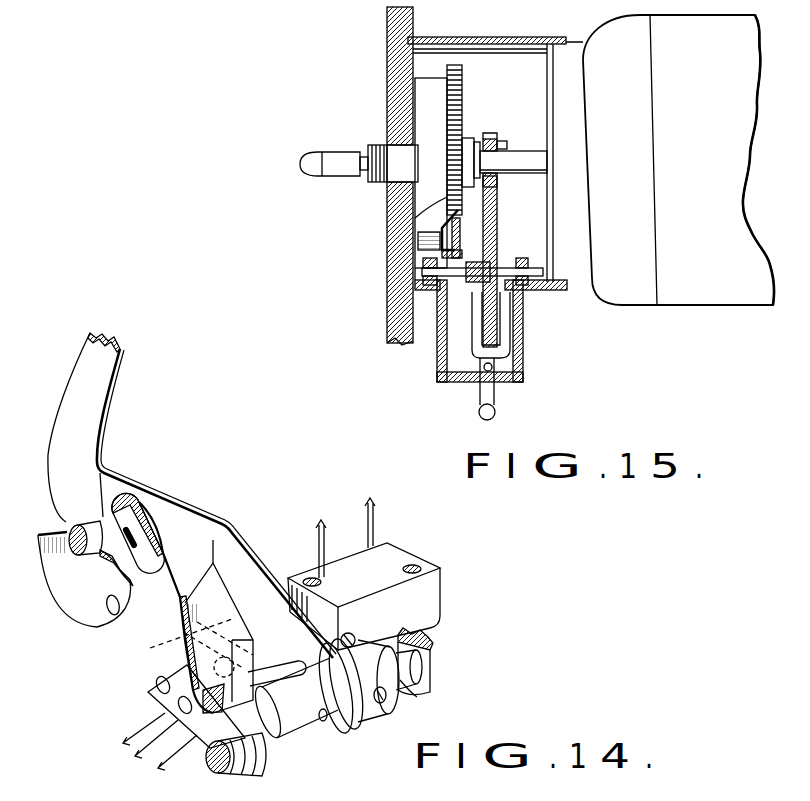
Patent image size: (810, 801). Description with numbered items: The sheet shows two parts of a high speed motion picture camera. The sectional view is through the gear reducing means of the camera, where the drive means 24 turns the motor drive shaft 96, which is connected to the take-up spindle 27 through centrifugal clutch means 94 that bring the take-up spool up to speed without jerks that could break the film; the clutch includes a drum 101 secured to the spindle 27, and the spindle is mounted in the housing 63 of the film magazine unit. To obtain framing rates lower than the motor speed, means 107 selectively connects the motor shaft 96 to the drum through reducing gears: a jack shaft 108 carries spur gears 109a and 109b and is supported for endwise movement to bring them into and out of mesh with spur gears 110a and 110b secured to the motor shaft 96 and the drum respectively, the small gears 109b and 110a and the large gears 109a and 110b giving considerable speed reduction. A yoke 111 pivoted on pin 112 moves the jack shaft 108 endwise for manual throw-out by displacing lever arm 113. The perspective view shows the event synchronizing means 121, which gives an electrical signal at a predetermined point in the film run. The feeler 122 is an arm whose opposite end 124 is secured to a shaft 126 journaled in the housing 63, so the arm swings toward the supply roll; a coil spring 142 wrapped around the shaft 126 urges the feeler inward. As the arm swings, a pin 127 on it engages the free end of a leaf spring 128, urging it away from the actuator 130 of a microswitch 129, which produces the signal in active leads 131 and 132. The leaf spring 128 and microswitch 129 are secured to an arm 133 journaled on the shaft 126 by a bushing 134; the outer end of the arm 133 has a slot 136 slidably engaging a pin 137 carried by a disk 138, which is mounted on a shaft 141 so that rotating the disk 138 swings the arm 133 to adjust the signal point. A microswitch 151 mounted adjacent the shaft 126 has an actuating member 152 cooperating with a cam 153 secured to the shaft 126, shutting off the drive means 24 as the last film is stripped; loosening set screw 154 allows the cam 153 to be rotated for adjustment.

In FIG. 15, the drive means 24 is at (677, 303).
In FIG. 15, the take-up spindle 27 is at (348, 152).
In FIG. 15, the housing 63 is at (387, 22).
In FIG. 15, the centrifugal clutch means 94 is at (427, 78).
In FIG. 15, the motor drive shaft 96 is at (527, 160).
In FIG. 15, the drum 101 is at (423, 190).
In FIG. 15, the means for selectively connecting 107 is at (416, 362).
In FIG. 15, the jack shaft 108 is at (540, 276).
In FIG. 15, the spur gear 109a is at (497, 238).
In FIG. 15, the spur gear 109b is at (450, 282).
In FIG. 15, the spur gear 110a is at (495, 139).
In FIG. 15, the spur gear 110b is at (443, 205).
In FIG. 15, the yoke 111 is at (509, 349).
In FIG. 15, the pin 112 is at (493, 367).
In FIG. 15, the lever arm 113 is at (492, 400).
In FIG. 14, the event synchronizing means 121 is at (98, 683).
In FIG. 14, the feeler 122 is at (96, 374).
In FIG. 14, the opposite end 124 is at (355, 720).
In FIG. 14, the shaft 126 is at (433, 672).
In FIG. 14, the pin 127 is at (287, 662).
In FIG. 14, the leaf spring 128 is at (205, 640).
In FIG. 14, the microswitch 129 is at (198, 682).
In FIG. 14, the actuator 130 is at (195, 641).
In FIG. 14, the active lead 131 is at (122, 745).
In FIG. 14, the active lead 132 is at (158, 770).
In FIG. 14, the arm 133 is at (150, 691).
In FIG. 14, the bushing 134 is at (288, 738).
In FIG. 14, the slot 136 is at (132, 540).
In FIG. 14, the pin 137 is at (143, 578).
In FIG. 14, the disk 138 is at (87, 602).
In FIG. 14, the shaft 141 is at (92, 527).
In FIG. 14, the coil spring 142 is at (245, 765).
In FIG. 14, the microswitch 151 is at (408, 560).
In FIG. 14, the actuating member 152 is at (346, 633).
In FIG. 14, the cam 153 is at (382, 668).
In FIG. 14, the set screw 154 is at (382, 703).